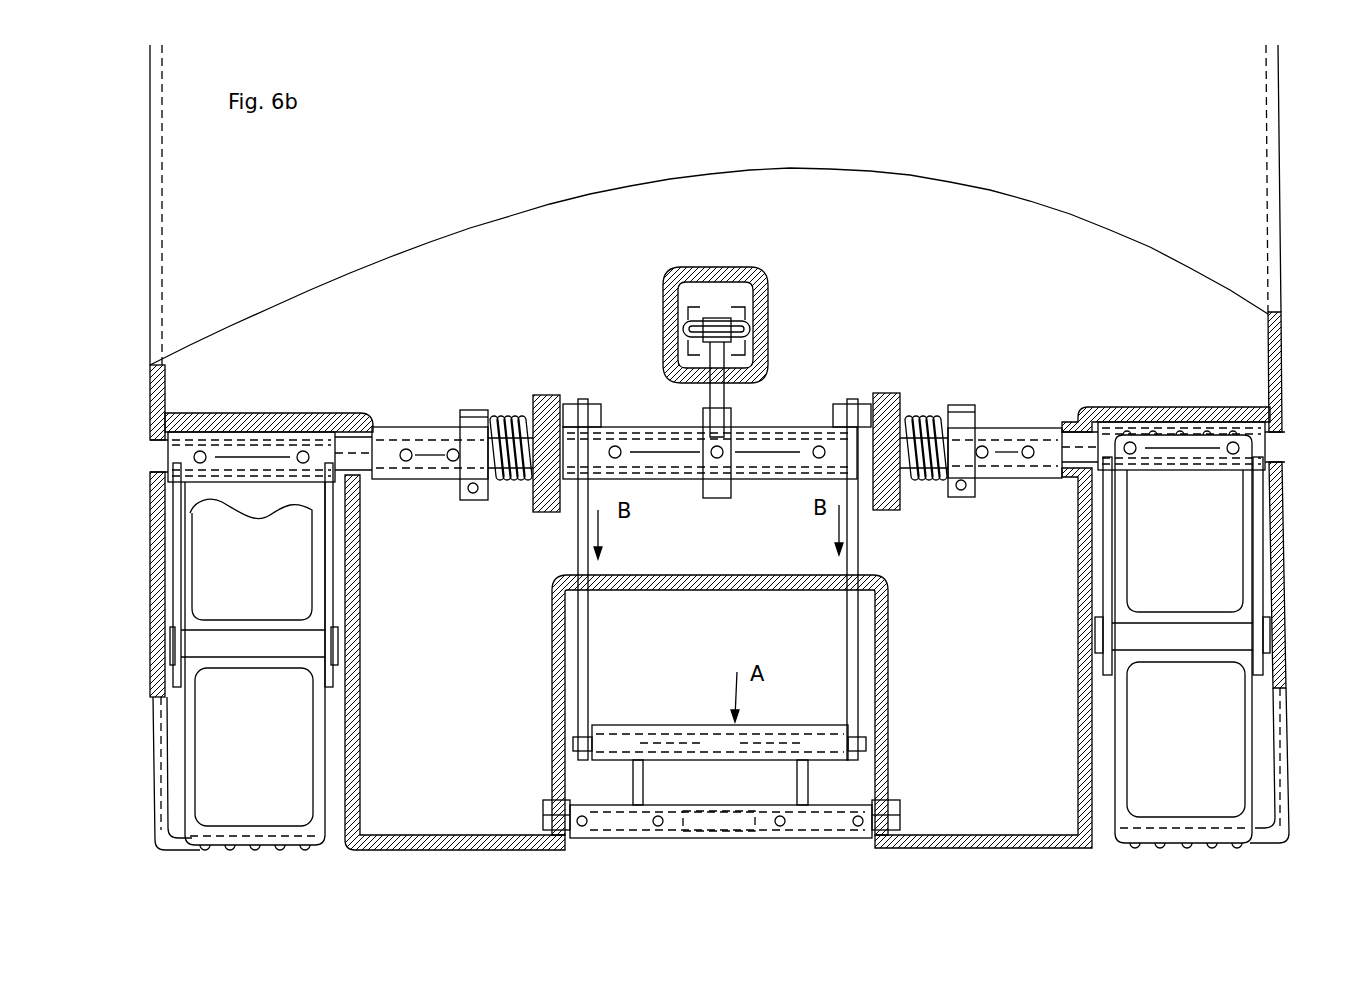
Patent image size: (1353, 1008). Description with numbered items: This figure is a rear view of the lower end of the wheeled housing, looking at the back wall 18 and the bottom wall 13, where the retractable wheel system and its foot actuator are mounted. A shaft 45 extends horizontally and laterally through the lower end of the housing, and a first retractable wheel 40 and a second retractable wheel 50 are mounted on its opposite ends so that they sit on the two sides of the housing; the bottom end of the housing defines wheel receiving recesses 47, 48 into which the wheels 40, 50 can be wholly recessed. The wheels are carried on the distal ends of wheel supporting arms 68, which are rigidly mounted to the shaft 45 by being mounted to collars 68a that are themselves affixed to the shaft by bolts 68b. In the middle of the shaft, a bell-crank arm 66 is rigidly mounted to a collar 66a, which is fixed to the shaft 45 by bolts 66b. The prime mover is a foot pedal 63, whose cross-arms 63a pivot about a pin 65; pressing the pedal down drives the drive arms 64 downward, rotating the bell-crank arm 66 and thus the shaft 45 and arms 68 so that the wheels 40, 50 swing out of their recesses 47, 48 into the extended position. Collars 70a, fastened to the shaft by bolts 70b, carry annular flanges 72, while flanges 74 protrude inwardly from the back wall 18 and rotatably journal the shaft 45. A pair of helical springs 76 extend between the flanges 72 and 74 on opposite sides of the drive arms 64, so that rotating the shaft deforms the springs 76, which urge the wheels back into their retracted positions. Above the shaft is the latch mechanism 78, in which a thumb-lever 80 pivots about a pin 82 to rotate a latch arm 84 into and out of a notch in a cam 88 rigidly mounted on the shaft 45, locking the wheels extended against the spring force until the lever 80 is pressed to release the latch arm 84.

The bottom wall 13 is at (397, 853).
The back wall 18 is at (1141, 159).
The first retractable wheel 40 is at (300, 838).
The shaft 45 is at (495, 478).
The wheel receiving recess 47 is at (340, 827).
The wheel receiving recess 48 is at (1107, 818).
The second retractable wheel 50 is at (1173, 833).
The foot pedal 63 is at (777, 720).
The cross-arms 63a is at (645, 788).
The drive arms 64 is at (578, 562).
The pin 65 is at (905, 815).
The bell-crank arm 66 is at (583, 402).
The collar 66a is at (787, 427).
The bolts 66b is at (616, 446).
The wheel supporting arms 68 is at (185, 547).
The collars 68a is at (333, 430).
The bolts 68b is at (1133, 445).
The collars 70a is at (387, 425).
The bolts 70b is at (408, 452).
The annular flanges 72 is at (473, 408).
The flanges 74 is at (545, 398).
The helical springs 76 is at (510, 418).
The latch mechanism 78 is at (751, 322).
The thumb-lever 80 is at (718, 318).
The pin 82 is at (757, 328).
The latch arm 84 is at (704, 395).
The cam 88 is at (727, 388).